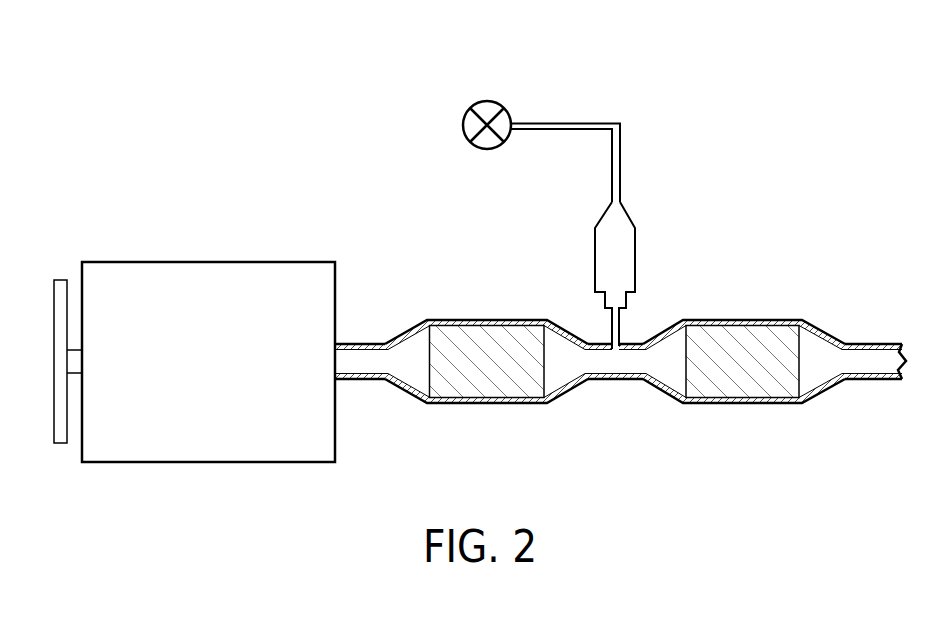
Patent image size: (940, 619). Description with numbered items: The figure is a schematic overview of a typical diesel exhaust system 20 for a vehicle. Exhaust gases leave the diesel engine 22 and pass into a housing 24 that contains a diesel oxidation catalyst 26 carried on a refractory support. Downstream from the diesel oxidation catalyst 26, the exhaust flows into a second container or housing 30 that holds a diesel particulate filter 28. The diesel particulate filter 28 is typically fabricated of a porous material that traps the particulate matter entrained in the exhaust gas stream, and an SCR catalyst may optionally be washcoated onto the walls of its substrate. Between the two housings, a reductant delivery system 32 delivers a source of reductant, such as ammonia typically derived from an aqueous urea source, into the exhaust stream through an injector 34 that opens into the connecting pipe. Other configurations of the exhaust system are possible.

The diesel exhaust system 20 is at (840, 108).
The diesel engine 22 is at (202, 262).
The housing 24 is at (405, 327).
The diesel oxidation catalyst 26 is at (483, 387).
The diesel particulate filter 28 is at (740, 387).
The housing 30 is at (828, 332).
The reductant delivery system 32 is at (652, 129).
The injector 34 is at (622, 327).